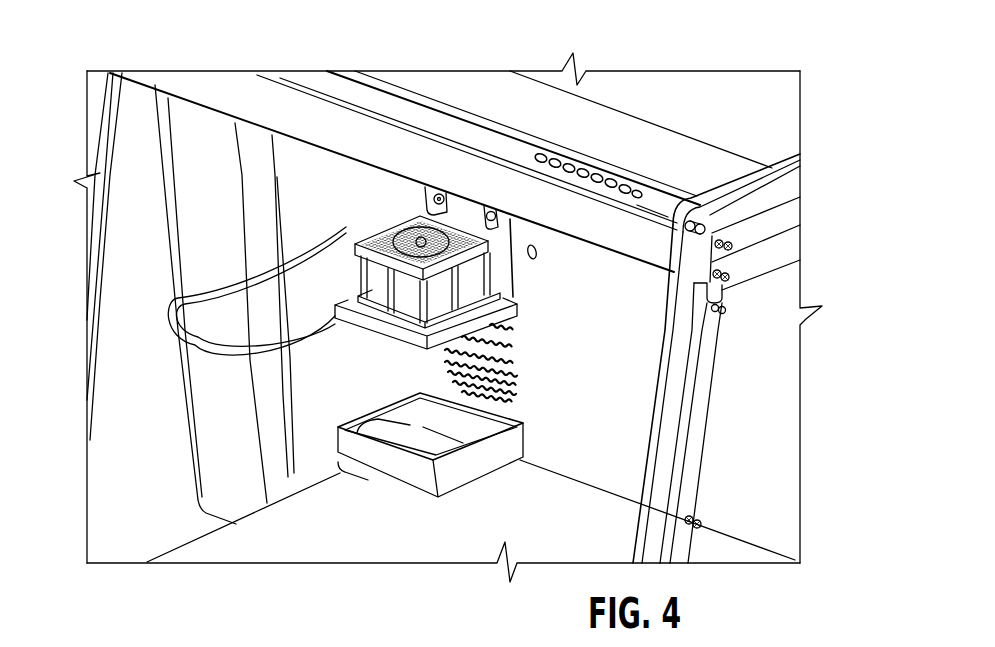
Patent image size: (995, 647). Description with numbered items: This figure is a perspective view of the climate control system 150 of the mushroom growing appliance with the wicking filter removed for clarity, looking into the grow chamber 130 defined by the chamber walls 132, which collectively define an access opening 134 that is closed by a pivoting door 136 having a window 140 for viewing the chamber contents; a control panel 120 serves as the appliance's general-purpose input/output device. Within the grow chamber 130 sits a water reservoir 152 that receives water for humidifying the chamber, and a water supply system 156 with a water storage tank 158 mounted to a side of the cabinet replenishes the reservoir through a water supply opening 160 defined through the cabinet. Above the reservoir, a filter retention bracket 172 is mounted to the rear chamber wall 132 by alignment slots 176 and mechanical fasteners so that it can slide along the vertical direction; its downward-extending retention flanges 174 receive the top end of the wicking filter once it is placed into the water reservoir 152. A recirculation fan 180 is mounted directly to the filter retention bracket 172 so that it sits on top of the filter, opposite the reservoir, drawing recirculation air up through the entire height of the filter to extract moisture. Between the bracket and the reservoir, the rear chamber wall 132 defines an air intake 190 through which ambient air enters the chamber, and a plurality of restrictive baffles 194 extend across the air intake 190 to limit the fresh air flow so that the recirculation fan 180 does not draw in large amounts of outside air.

The control panel 120 is at (615, 177).
The grow chamber 130 is at (636, 395).
The chamber walls 132 is at (653, 303).
The access opening 134 is at (648, 368).
The door 136 is at (740, 180).
The window 140 is at (777, 102).
The climate control system 150 is at (322, 372).
The water reservoir 152 is at (491, 472).
The water supply system 156 is at (157, 186).
The water storage tank 158 is at (173, 250).
The water supply opening 160 is at (335, 478).
The filter retention bracket 172 is at (400, 327).
The retention flanges 174 is at (428, 348).
The alignment slots 176 is at (447, 193).
The recirculation fan 180 is at (487, 217).
The air intake 190 is at (521, 388).
The restrictive baffles 194 is at (517, 360).